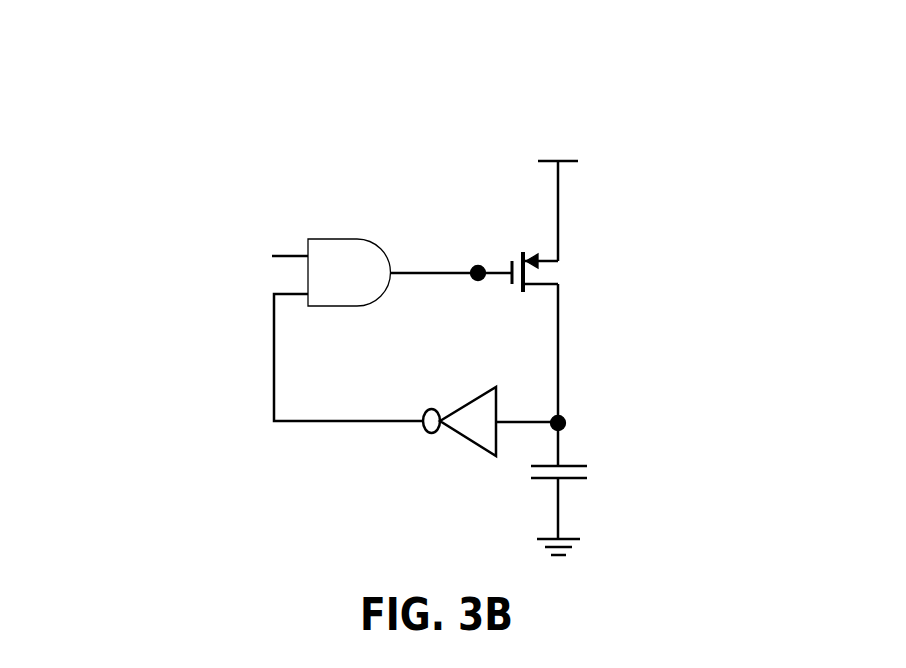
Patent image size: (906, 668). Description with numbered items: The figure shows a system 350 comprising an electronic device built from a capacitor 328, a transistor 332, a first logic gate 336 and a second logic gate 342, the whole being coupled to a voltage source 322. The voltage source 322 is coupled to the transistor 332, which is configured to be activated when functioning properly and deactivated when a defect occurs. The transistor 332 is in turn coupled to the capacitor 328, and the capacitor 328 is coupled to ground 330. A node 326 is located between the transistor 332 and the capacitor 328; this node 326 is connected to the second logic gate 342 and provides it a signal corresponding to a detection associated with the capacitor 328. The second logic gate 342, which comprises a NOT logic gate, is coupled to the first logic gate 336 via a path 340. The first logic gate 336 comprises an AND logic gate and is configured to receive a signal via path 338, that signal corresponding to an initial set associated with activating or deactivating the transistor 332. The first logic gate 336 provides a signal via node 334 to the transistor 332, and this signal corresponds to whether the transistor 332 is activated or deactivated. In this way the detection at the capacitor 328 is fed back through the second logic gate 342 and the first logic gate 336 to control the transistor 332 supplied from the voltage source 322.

The voltage source 322 is at (573, 132).
The node 326 is at (563, 416).
The capacitor 328 is at (580, 466).
The ground 330 is at (573, 539).
The transistor 332 is at (520, 286).
The node 334 is at (479, 266).
The first logic gate 336 is at (358, 239).
The path 338 is at (290, 256).
The path 340 is at (274, 383).
The second logic gate 342 is at (466, 437).
The system 350 is at (174, 160).